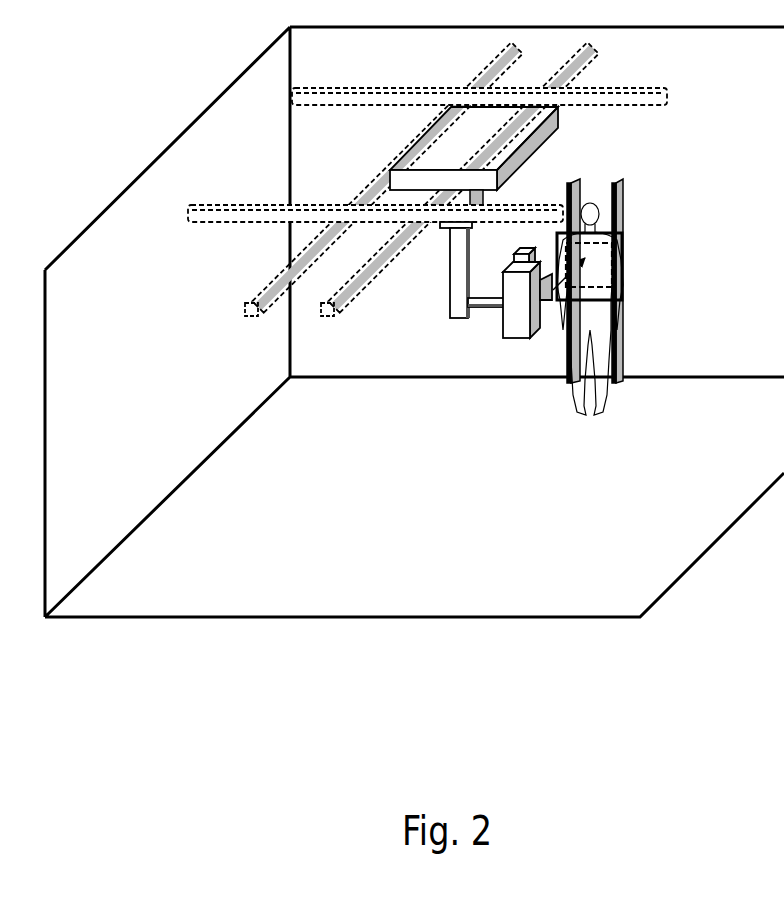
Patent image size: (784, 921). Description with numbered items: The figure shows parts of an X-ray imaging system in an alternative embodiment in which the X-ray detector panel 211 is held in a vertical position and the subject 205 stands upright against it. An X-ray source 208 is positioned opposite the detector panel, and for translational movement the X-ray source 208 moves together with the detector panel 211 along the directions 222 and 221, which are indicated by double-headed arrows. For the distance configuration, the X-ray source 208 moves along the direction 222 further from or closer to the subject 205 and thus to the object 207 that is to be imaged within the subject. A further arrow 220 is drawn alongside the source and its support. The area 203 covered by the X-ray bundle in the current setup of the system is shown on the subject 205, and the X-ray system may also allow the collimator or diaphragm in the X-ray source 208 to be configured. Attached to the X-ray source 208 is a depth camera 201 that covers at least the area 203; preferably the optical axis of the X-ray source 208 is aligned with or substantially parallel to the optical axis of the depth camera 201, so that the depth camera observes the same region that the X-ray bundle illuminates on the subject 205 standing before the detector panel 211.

The depth camera 201 is at (517, 274).
The area covered by the X-ray bundle 203 is at (605, 257).
The subject 205 is at (597, 298).
The object 207 is at (582, 350).
The X-ray source 208 is at (523, 322).
The X-ray detector panel 211 is at (612, 283).
The vertical movement direction 220 is at (437, 262).
The direction 221 is at (598, 122).
The direction 222 is at (409, 124).